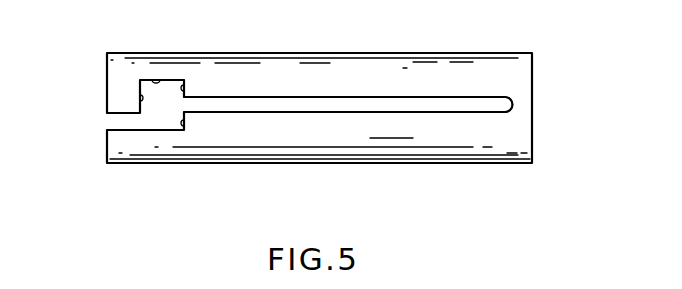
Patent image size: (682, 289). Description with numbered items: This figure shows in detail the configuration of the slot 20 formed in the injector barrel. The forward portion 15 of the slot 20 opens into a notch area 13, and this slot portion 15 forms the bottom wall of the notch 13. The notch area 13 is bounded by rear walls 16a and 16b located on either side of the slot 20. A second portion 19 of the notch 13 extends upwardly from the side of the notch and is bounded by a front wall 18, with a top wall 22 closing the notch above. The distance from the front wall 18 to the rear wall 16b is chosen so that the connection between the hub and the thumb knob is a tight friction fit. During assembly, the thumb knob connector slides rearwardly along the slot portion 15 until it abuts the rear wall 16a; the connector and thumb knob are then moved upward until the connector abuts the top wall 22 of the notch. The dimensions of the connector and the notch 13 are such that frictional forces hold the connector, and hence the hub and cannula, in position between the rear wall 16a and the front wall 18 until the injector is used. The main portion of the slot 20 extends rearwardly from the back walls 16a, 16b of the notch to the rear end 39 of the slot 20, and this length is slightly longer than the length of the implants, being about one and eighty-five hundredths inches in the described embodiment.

The notch area 13 is at (162, 115).
The forward portion of slot 15 is at (110, 124).
The rear wall 16a is at (186, 124).
The rear wall 16b is at (185, 87).
The front wall 18 is at (139, 97).
The second portion of notch 19 is at (169, 93).
The slot 20 is at (387, 110).
The top wall of notch 22 is at (150, 80).
The rear end of slot 39 is at (506, 106).